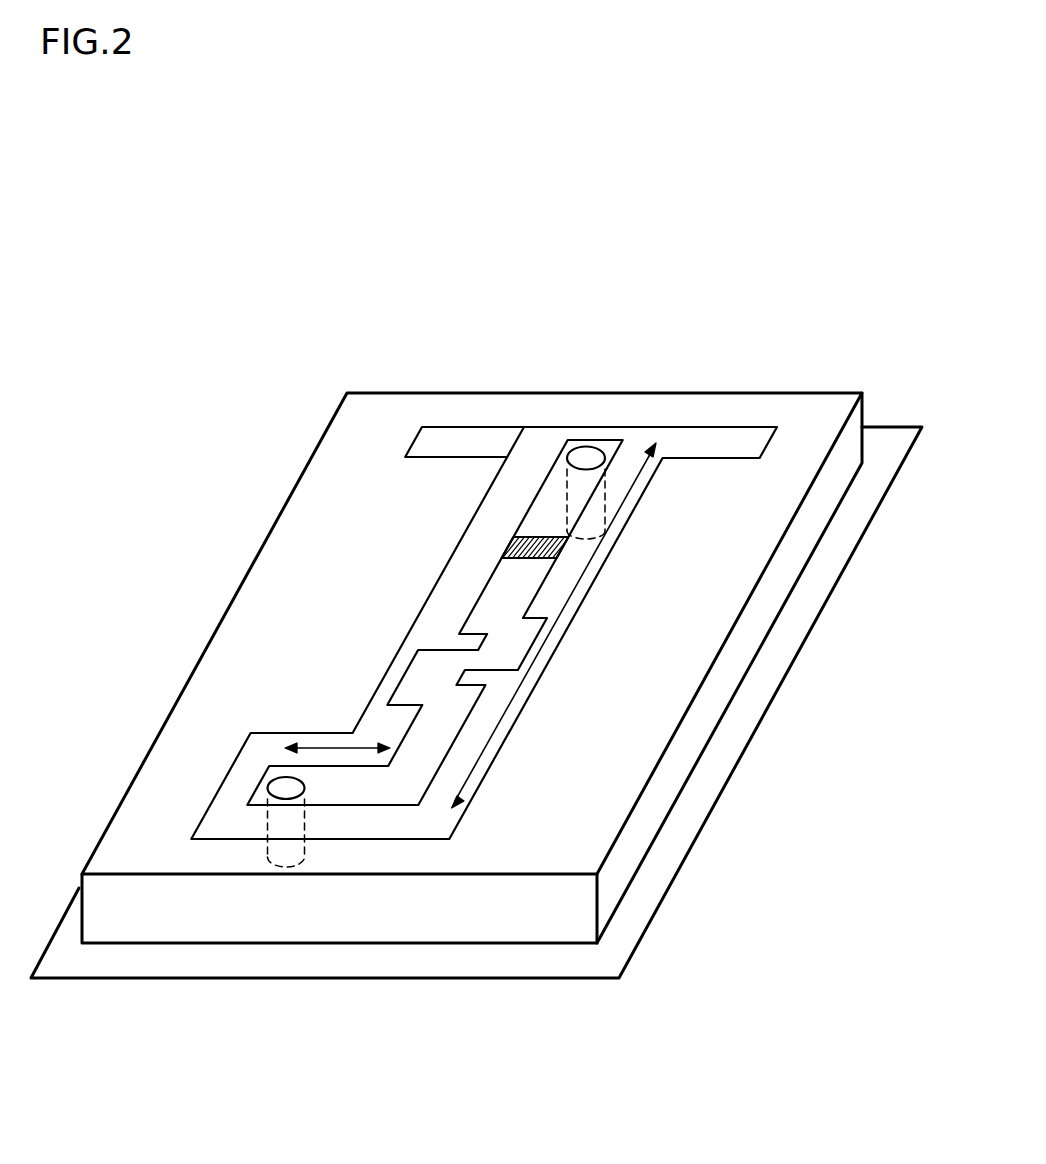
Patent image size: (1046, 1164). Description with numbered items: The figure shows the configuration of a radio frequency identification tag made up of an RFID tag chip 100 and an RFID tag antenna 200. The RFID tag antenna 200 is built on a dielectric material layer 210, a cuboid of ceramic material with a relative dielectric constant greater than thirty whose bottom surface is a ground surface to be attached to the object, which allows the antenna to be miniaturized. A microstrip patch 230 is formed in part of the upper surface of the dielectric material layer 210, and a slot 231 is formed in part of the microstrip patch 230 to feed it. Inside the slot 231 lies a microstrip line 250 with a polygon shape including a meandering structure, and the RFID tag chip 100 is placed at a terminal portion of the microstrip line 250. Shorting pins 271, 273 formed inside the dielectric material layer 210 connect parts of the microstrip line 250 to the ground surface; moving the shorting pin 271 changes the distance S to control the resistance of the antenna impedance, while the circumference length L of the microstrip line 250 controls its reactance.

The RFID tag antenna 200 is at (476, 626).
The dielectric material layer 210 is at (718, 688).
The microstrip patch 230 is at (333, 543).
The slot 231 is at (465, 807).
The microstrip line 250 is at (530, 505).
The RFID tag chip 100 is at (510, 545).
The shorting pin 271 is at (268, 788).
The shorting pin 273 is at (590, 447).